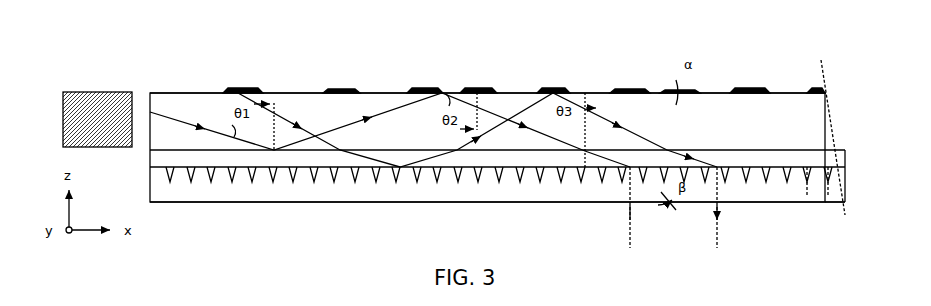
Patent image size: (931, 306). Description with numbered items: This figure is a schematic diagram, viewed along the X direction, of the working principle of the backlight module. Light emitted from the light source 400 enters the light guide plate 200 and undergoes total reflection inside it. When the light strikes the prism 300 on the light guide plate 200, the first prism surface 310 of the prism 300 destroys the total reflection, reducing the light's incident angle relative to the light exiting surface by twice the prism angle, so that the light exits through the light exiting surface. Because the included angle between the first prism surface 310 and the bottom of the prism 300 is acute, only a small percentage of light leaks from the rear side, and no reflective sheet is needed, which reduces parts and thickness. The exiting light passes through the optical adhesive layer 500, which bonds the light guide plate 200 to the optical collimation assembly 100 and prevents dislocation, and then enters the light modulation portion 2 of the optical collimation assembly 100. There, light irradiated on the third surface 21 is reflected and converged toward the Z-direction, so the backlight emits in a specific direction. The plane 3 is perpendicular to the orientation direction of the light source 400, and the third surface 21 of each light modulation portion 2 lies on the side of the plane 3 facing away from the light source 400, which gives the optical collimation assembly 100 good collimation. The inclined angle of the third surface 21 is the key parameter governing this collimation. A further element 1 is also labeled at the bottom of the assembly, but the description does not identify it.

The optical collimation assembly 100 is at (433, 205).
The light guide plate 200 is at (825, 120).
The prism 300 is at (742, 86).
The first prism surface 310 is at (754, 90).
The light source 400 is at (115, 98).
The optical adhesive layer 500 is at (840, 153).
The substrate 1 is at (838, 196).
The light modulation portion 2 is at (840, 169).
The third surface 21 is at (843, 177).
The plane 3 is at (828, 165).